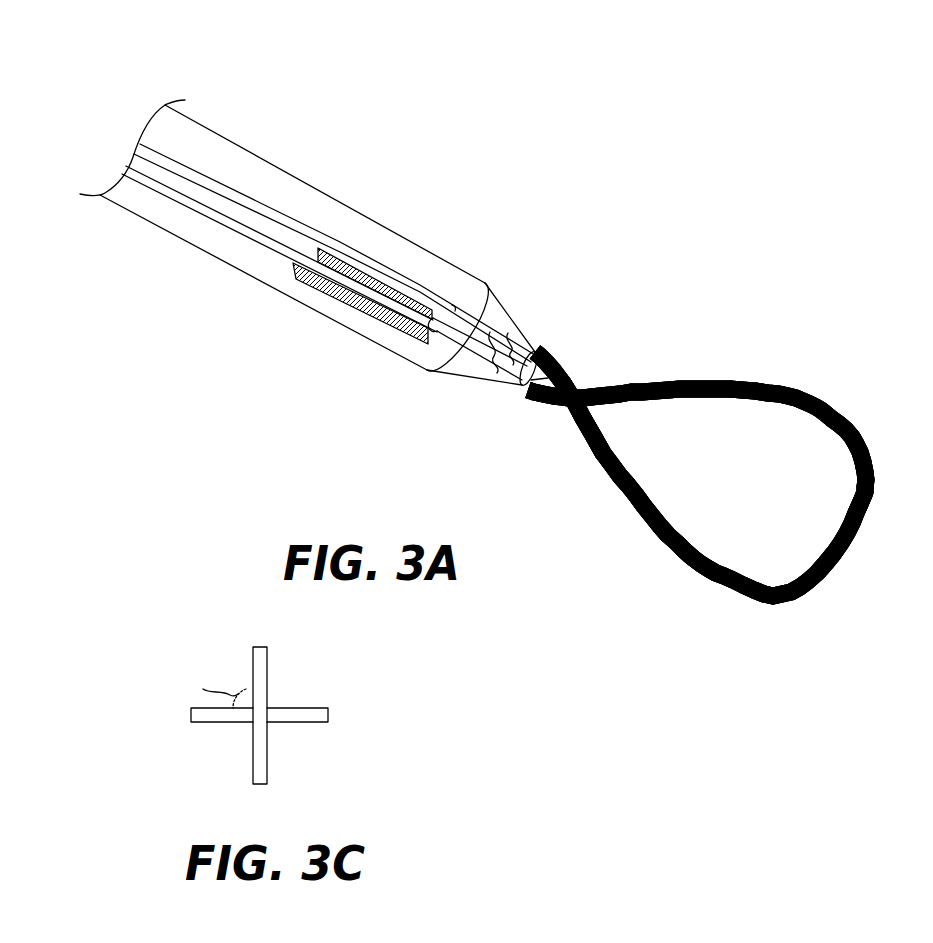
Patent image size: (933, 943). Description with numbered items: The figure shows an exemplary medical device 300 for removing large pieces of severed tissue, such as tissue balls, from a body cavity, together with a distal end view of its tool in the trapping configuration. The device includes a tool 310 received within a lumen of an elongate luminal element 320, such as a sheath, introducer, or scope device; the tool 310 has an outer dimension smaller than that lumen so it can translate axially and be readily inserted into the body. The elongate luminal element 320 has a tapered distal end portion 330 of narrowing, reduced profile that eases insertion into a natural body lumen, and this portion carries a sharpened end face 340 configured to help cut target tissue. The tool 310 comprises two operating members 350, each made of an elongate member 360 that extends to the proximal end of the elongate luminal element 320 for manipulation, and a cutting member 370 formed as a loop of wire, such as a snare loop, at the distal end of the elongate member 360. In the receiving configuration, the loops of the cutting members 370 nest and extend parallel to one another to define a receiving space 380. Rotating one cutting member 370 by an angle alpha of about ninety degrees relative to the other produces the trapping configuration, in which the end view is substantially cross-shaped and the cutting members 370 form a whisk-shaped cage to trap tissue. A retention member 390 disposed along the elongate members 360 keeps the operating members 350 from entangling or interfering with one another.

In FIG. 3A, the medical device 300 is at (301, 416).
In FIG. 3A, the tool 310 is at (547, 353).
In FIG. 3C, the tool 310 is at (224, 652).
In FIG. 3A, the elongate luminal element 320 is at (337, 198).
In FIG. 3A, the tapered distal end portion 330 is at (510, 318).
In FIG. 3A, the sharpened end face 340 is at (520, 388).
In FIG. 3A, the operating member 350 is at (486, 335).
In FIG. 3A, the elongate member 360 is at (240, 197).
In FIG. 3A, the cutting member 370 is at (866, 441).
In FIG. 3C, the cutting member 370 is at (267, 682).
In FIG. 3A, the receiving space 380 is at (759, 484).
In FIG. 3A, the retention member 390 is at (455, 303).